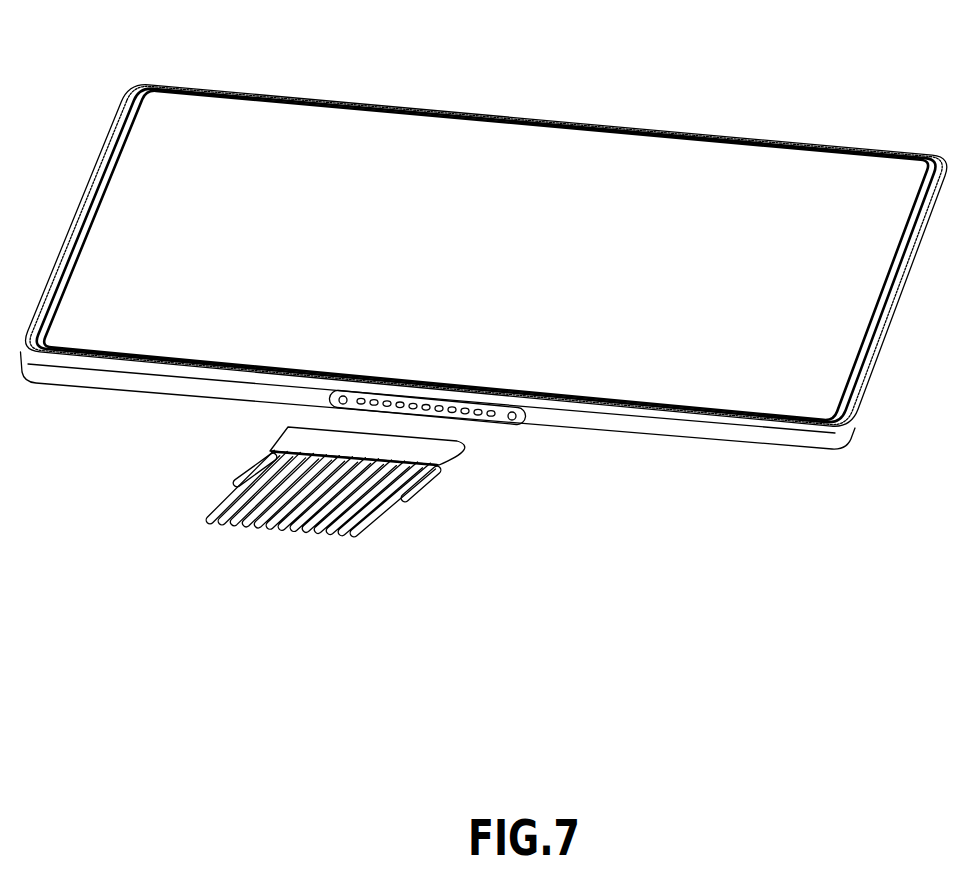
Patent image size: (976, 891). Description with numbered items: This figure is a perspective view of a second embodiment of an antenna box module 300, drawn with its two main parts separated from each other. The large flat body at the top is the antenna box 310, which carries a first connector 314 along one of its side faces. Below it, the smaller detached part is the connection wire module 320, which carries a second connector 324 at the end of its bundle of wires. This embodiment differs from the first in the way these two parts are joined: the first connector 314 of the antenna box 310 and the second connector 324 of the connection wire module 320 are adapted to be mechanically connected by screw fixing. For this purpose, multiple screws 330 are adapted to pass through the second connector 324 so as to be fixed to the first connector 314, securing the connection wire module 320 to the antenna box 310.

The antenna box module 300 is at (484, 362).
The antenna box 310 is at (670, 183).
The first connector 314 is at (352, 400).
The connection wire module 320 is at (397, 552).
The second connector 324 is at (437, 446).
The screws 330 is at (430, 485).